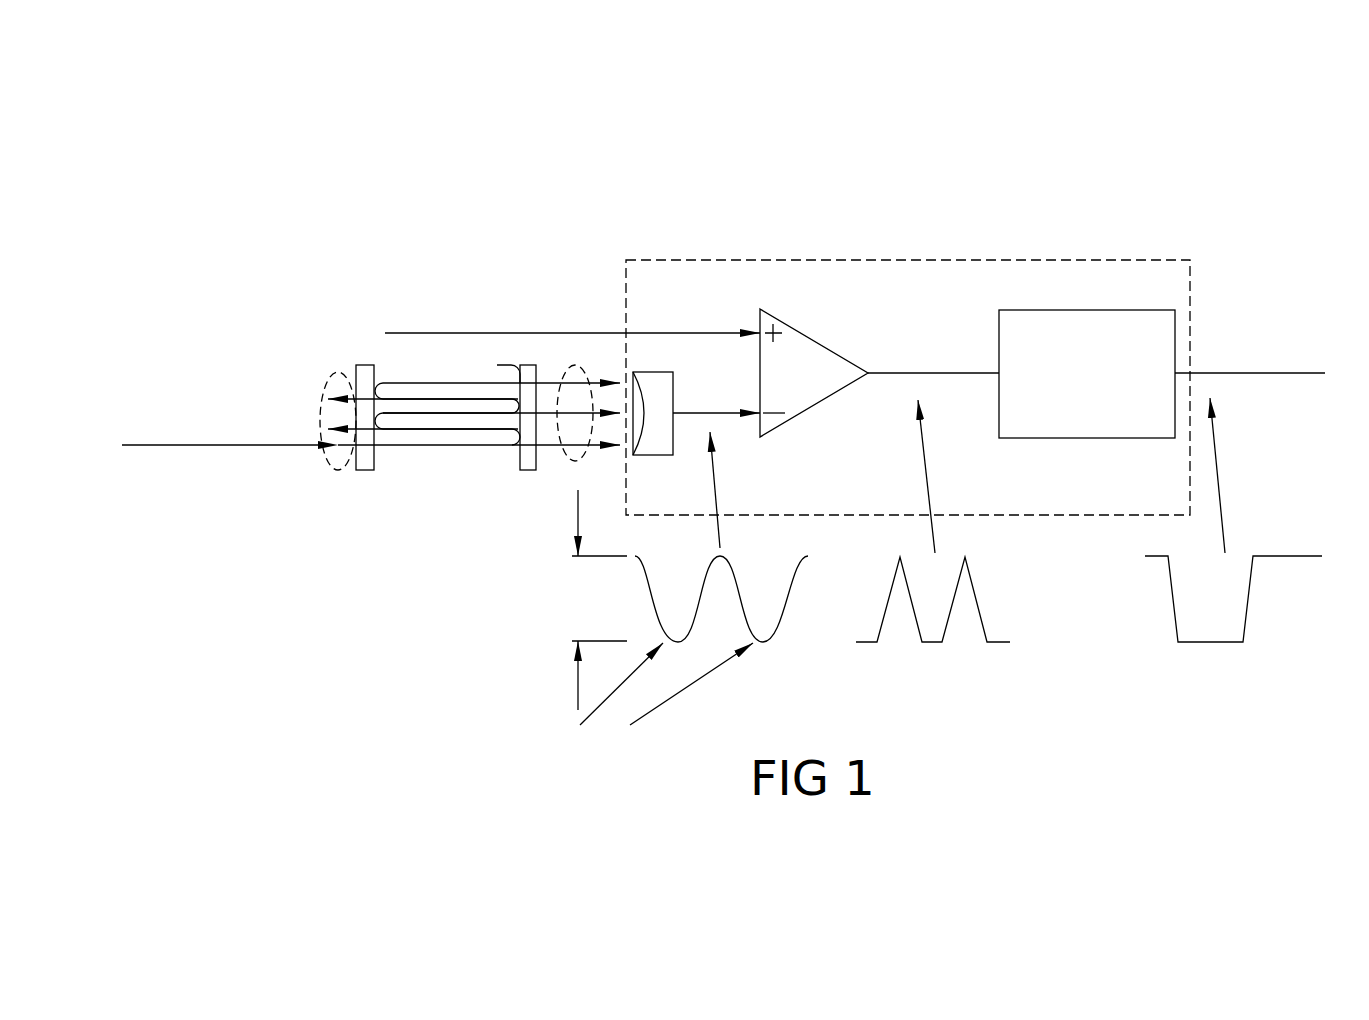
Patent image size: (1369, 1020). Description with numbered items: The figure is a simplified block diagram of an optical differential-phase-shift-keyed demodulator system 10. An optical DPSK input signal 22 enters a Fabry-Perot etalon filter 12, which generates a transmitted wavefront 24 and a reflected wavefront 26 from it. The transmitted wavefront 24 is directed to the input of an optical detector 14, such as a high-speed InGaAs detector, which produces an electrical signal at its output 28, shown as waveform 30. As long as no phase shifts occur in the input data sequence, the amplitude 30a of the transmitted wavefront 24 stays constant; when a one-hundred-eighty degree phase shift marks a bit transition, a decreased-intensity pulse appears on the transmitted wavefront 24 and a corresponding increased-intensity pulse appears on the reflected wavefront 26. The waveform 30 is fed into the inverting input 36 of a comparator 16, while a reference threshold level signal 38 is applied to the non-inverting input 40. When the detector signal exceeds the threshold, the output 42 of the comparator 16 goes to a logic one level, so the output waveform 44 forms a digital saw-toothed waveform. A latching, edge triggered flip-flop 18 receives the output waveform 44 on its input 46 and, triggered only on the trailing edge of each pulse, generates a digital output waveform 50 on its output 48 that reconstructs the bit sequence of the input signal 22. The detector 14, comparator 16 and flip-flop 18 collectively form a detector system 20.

The optical DPSK demodulator system 10 is at (318, 298).
The Fabry-Perot etalon filter 12 is at (323, 378).
The optical detector 14 is at (657, 383).
The comparator 16 is at (810, 355).
The latching edge triggered flip-flop 18 is at (1087, 374).
The detector system 20 is at (1042, 515).
The optical DPSK input signal 22 is at (226, 445).
The transmitted wavefront 24 is at (572, 462).
The reflected wavefront 26 is at (322, 420).
The output 28 is at (673, 413).
The waveform 30 is at (785, 617).
The amplitude 30a is at (593, 600).
The inverting input 36 is at (760, 410).
The reference threshold level signal 38 is at (640, 333).
The non-inverting input 40 is at (760, 328).
The output 42 is at (872, 372).
The output waveform 44 is at (948, 625).
The input 46 is at (999, 372).
The output 48 is at (1175, 372).
The digital output waveform 50 is at (1248, 615).